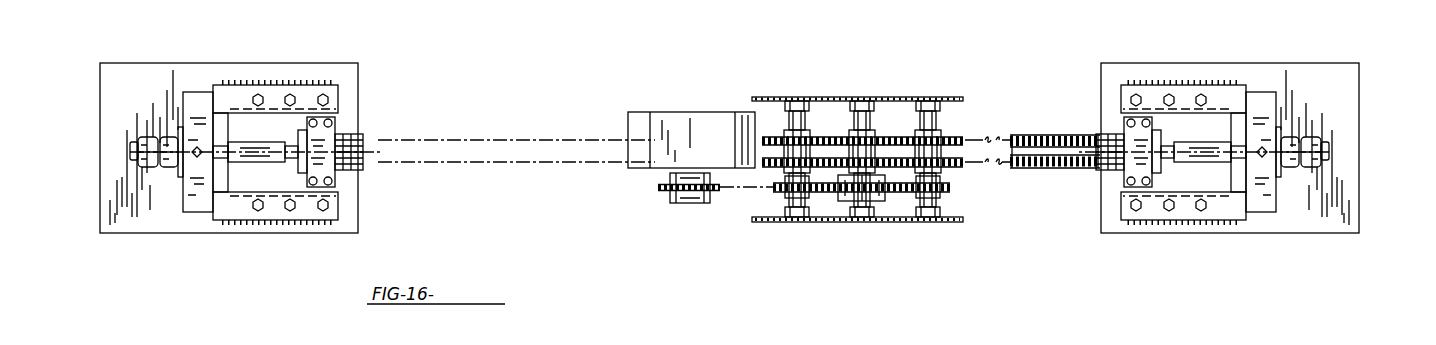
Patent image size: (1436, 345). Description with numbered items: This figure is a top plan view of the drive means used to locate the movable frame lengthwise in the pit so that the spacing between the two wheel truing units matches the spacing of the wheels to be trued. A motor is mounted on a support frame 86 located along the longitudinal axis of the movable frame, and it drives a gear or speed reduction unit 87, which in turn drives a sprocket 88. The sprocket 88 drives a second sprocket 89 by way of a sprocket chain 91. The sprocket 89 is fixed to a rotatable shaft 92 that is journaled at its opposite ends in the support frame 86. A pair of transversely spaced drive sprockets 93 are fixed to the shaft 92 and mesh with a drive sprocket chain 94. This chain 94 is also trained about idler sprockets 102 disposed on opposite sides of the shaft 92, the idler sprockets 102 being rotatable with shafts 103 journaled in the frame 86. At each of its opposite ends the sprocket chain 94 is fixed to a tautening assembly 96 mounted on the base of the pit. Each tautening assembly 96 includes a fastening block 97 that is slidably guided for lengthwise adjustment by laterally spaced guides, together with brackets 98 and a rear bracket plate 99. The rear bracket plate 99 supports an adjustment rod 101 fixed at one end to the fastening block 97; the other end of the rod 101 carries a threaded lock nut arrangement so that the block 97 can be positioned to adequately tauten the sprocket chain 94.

The support frame 86 is at (911, 98).
The gear or speed reduction unit 87 is at (677, 125).
The sprocket 88 is at (664, 190).
The sprocket 89 is at (898, 191).
The sprocket chain 91 is at (753, 219).
The rotatable shaft 92 is at (858, 105).
The drive sprockets 93 is at (884, 132).
The drive sprocket chain 94 is at (1045, 131).
The tautening assemblies 96 is at (346, 58).
The fastening block 97 is at (327, 166).
The mounting bracket 98 is at (273, 100).
The rear bracket plate 99 is at (202, 100).
The adjustment rod 101 is at (245, 156).
The idler sprockets 102 is at (765, 138).
The shafts 103 is at (808, 104).